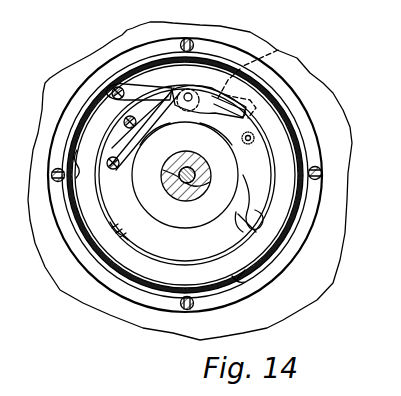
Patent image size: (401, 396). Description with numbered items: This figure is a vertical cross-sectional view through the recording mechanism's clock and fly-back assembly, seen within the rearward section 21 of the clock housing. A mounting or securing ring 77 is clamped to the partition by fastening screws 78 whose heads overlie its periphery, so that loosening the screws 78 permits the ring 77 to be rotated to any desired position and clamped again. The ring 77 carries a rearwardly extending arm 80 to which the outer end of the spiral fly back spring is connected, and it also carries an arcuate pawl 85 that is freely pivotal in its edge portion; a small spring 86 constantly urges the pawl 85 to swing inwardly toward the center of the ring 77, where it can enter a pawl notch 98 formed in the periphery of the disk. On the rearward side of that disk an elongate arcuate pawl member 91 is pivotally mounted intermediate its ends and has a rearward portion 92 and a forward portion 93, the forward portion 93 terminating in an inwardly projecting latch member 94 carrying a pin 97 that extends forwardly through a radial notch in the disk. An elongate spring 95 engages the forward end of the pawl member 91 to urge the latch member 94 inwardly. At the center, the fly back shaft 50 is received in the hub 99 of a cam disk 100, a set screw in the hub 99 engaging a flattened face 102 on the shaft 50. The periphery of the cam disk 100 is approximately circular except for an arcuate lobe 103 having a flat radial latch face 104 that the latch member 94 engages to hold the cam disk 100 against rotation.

The rearward section 21 is at (84, 63).
The small spring 86 is at (116, 52).
The arcuate pawl 85 is at (157, 85).
The mounting ring 77 is at (105, 244).
The fastening screws 78 is at (77, 178).
The rearwardly extending arm 80 is at (110, 224).
The pawl notch 98 is at (258, 79).
The pin 97 is at (188, 92).
The latch member 94 is at (200, 95).
The forward portion 93 is at (245, 113).
The pawl member 91 is at (262, 148).
The elongate spring 95 is at (123, 130).
The rearward portion 92 is at (250, 226).
The cam disk 100 is at (178, 215).
The latch face 104 is at (159, 137).
The arcuate lobe 103 is at (212, 137).
The flattened face 102 is at (168, 168).
The fly back shaft 50 is at (170, 191).
The hub 99 is at (197, 181).